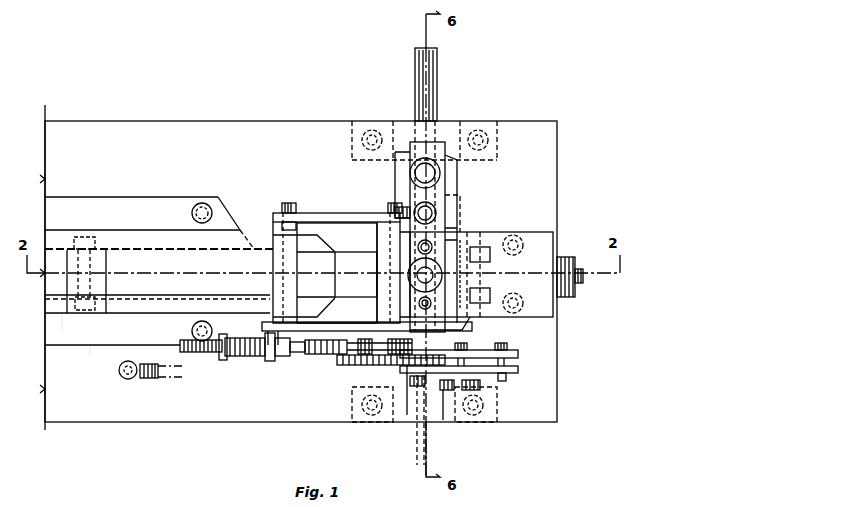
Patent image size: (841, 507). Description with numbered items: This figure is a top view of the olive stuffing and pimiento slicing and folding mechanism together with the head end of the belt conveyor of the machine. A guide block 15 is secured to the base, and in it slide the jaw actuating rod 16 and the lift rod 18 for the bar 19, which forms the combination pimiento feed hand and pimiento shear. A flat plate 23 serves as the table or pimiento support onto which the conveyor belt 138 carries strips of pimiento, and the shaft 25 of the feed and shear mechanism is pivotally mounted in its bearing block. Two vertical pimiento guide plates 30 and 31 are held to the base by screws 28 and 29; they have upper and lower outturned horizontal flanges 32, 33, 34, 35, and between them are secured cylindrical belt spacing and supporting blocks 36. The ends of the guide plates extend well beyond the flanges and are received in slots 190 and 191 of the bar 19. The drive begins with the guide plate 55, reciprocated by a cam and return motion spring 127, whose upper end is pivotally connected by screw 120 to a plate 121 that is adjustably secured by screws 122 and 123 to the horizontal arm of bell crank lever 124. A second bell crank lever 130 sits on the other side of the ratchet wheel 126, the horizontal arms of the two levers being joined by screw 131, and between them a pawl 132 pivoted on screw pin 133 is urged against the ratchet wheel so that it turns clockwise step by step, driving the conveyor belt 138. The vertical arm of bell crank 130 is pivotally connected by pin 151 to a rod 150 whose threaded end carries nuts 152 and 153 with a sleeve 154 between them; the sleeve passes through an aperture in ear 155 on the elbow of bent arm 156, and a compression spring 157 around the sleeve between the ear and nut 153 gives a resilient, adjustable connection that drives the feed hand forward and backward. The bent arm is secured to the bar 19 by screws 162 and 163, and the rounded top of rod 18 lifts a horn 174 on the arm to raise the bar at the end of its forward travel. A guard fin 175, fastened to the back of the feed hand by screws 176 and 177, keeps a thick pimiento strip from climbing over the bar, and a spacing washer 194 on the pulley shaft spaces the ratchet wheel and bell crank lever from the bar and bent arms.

The guide block 15 is at (437, 228).
The jaw actuating rod 16 is at (408, 170).
The lift rod 18 is at (458, 262).
The bar 19 is at (395, 235).
The flat plate 23 is at (390, 250).
The shaft 25 is at (292, 203).
The screw 28 is at (197, 205).
The screw 29 is at (200, 352).
The pimiento guide plate 30 is at (108, 297).
The pimiento guide plate 31 is at (192, 248).
The flange 32 is at (82, 313).
The flange 33 is at (98, 230).
The flange 34 is at (96, 345).
The flange 35 is at (112, 197).
The belt spacing and supporting block 36 is at (72, 285).
The guide plate 55 is at (462, 400).
The screw 120 is at (445, 395).
The plate 121 is at (458, 392).
The screw 122 is at (465, 385).
The screw 123 is at (420, 427).
The bell crank lever 124 is at (502, 377).
The ratchet wheel 126 is at (407, 415).
The return motion spring 127 is at (182, 378).
The bell crank lever 130 is at (470, 350).
The screw 131 is at (523, 362).
The pawl 132 is at (505, 348).
The screw pin 133 is at (463, 345).
The conveyor belt 138 is at (173, 265).
The rod 150 is at (325, 387).
The pin 151 is at (380, 382).
The nut 152 is at (275, 340).
The nut 153 is at (222, 358).
The sleeve 154 is at (278, 362).
The ear 155 is at (270, 360).
The bent arm 156 is at (328, 330).
The compression spring 157 is at (232, 340).
The screw 162 is at (394, 205).
The screw 163 is at (478, 388).
The horn 174 is at (462, 308).
The guard fin 175 is at (302, 290).
The screw 176 is at (365, 237).
The screw 177 is at (375, 283).
The slot 190 is at (475, 128).
The slot 191 is at (410, 243).
The spacing washer 194 is at (360, 370).